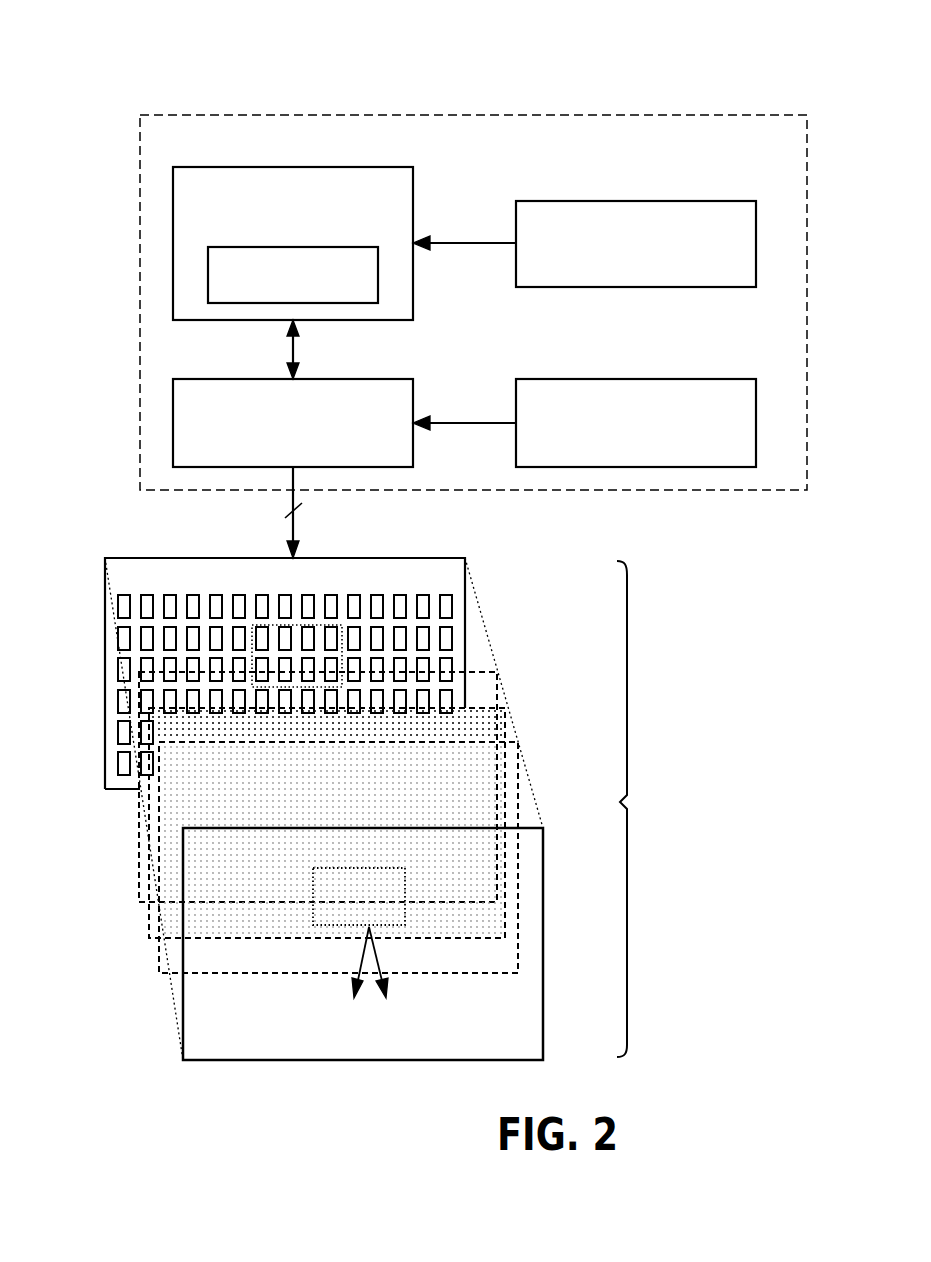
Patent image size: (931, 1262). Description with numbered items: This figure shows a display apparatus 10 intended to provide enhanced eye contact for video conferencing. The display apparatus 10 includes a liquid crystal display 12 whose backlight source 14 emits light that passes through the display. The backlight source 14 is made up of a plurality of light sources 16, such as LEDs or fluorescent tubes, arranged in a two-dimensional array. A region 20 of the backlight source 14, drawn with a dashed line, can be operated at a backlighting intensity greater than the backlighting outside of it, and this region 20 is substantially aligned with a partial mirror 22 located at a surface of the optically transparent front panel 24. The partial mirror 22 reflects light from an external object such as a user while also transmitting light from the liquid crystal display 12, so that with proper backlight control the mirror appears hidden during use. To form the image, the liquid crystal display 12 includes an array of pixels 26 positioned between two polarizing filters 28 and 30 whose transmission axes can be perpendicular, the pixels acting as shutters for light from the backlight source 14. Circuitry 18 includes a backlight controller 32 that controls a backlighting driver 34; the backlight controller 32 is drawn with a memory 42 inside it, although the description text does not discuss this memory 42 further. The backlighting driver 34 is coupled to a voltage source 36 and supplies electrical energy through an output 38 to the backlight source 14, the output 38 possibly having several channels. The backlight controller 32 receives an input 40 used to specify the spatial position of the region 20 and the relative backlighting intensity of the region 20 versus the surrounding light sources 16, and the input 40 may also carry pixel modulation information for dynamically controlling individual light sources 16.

The display apparatus 10 is at (773, 58).
The liquid crystal display 12 is at (654, 809).
The backlight source 14 is at (452, 612).
The light sources 16 is at (428, 660).
The circuitry 18 is at (312, 115).
The region 20 is at (250, 630).
The partial mirror 22 is at (335, 928).
The front panel 24 is at (543, 910).
The array of pixels 26 is at (506, 738).
The polarizing filter 28 is at (519, 790).
The polarizing filter 30 is at (500, 693).
The backlight controller 32 is at (413, 198).
The backlighting driver 34 is at (385, 379).
The voltage source 36 is at (637, 379).
The output 38 is at (298, 524).
The input 40 is at (713, 201).
The memory 42 is at (378, 283).